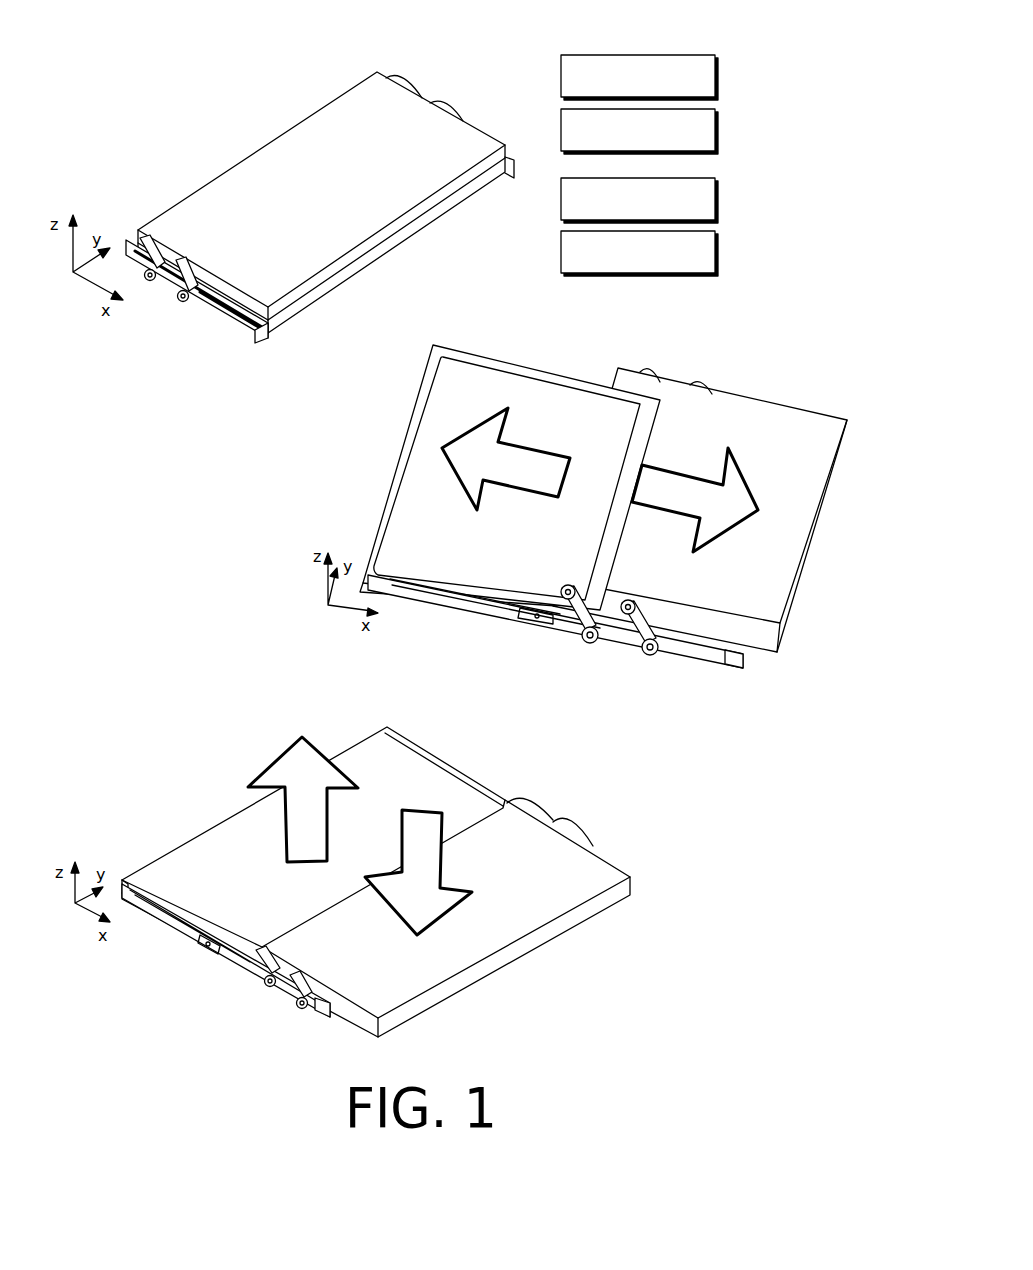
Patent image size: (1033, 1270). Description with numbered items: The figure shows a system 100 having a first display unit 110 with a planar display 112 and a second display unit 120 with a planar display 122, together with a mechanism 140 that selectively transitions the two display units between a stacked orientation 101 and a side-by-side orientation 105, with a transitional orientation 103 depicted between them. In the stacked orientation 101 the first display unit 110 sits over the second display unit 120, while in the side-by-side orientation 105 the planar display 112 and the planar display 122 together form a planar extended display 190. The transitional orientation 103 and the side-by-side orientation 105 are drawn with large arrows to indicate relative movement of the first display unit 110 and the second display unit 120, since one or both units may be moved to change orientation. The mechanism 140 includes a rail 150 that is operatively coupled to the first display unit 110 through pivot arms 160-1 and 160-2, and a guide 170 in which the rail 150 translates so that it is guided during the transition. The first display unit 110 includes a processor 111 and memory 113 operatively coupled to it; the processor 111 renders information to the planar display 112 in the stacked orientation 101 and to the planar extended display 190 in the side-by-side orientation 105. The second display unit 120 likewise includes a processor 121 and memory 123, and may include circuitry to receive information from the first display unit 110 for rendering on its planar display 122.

The system 100 is at (205, 121).
The stacked orientation 101 is at (327, 52).
The transitional orientation 103 is at (660, 325).
The side-by-side orientation 105 is at (203, 739).
The first display unit 110 is at (460, 145).
The processor 111 is at (531, 80).
The planar display 112 is at (493, 514).
The memory 113 is at (531, 125).
The second display unit 120 is at (448, 200).
The processor 121 is at (528, 207).
The planar display 122 is at (427, 586).
The memory 123 is at (528, 245).
The mechanism 140 is at (176, 313).
The rail 150 is at (255, 338).
The pivot arm 160-1 is at (190, 268).
The pivot arm 160-2 is at (158, 245).
The guide 170 is at (263, 328).
The planar extended display 190 is at (213, 849).